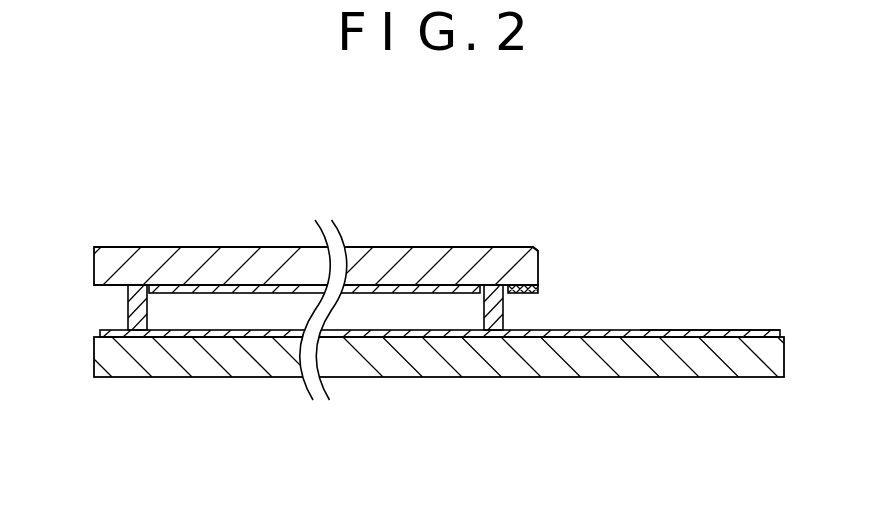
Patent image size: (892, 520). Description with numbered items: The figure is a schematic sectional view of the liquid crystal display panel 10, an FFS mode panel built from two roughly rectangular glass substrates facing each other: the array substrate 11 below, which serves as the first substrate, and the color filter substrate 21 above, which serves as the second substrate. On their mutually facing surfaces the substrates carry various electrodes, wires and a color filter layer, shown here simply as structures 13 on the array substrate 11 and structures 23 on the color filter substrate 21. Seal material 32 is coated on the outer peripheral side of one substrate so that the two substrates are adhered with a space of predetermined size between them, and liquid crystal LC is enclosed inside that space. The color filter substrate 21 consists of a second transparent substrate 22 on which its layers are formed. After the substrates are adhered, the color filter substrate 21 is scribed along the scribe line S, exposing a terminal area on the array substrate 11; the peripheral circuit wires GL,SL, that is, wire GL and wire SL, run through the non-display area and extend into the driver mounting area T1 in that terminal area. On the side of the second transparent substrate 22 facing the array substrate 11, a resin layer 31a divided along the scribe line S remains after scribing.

The liquid crystal display panel 10 is at (123, 88).
The array substrate 11 is at (589, 377).
The structures 13 is at (208, 335).
The color filter substrate 21 is at (185, 247).
The second transparent substrate 22 is at (129, 262).
The structures 23 is at (414, 289).
The resin layer 31a is at (522, 288).
The seal material 32 is at (137, 318).
The liquid crystal LC is at (397, 318).
The scribe line S is at (538, 247).
The driver mounting area T1 is at (722, 331).
The peripheral circuit wires GL,SL is at (740, 382).
The peripheral circuit wire GL is at (740, 382).
The peripheral circuit wire SL is at (750, 337).